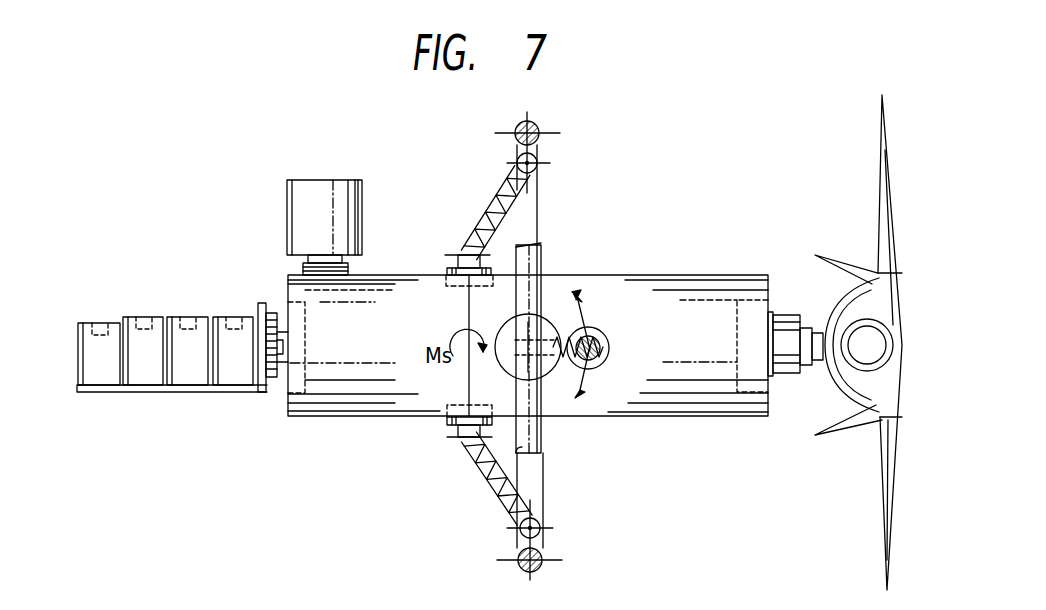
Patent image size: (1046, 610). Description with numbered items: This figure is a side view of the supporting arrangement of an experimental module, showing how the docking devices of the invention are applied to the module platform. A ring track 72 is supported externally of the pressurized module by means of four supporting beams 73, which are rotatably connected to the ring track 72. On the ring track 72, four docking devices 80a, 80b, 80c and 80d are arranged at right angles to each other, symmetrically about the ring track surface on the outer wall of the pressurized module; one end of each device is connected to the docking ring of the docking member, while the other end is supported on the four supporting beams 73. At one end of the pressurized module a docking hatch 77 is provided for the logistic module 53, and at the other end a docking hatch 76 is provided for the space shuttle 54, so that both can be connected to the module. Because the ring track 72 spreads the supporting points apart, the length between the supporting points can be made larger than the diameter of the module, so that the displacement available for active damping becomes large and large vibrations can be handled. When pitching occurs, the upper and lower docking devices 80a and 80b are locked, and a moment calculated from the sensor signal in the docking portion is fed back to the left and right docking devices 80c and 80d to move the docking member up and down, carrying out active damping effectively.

The logistic module 53 is at (313, 186).
The docking hatch 77 is at (303, 271).
The ring track 72 is at (537, 124).
The supporting beams 73 is at (488, 211).
The docking device 80a is at (446, 272).
The docking device 80b is at (452, 425).
The docking device 80c is at (593, 362).
The docking device 80d is at (591, 328).
The docking hatch 76 is at (788, 374).
The space shuttle 54 is at (880, 217).